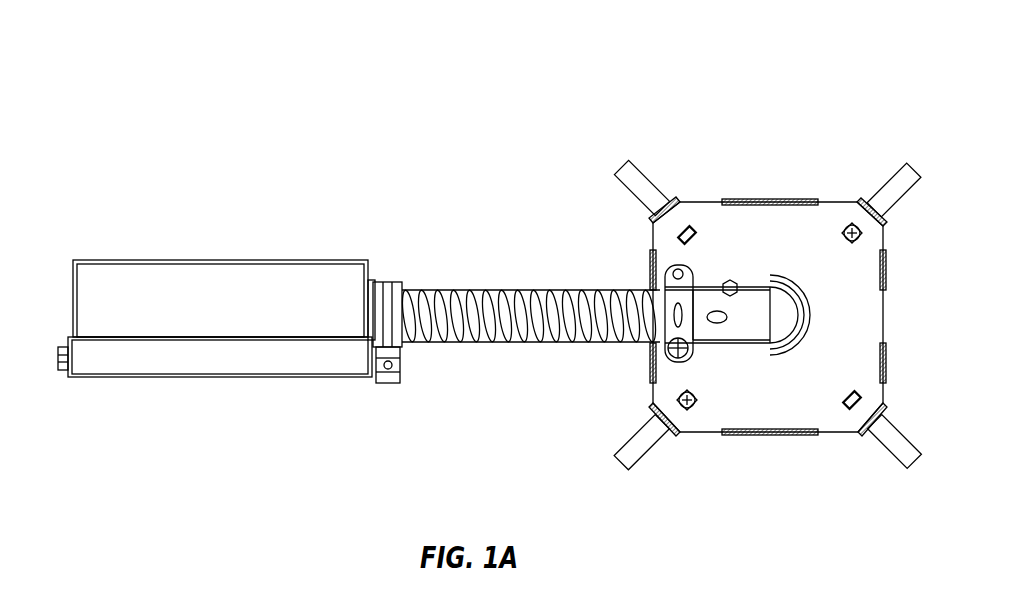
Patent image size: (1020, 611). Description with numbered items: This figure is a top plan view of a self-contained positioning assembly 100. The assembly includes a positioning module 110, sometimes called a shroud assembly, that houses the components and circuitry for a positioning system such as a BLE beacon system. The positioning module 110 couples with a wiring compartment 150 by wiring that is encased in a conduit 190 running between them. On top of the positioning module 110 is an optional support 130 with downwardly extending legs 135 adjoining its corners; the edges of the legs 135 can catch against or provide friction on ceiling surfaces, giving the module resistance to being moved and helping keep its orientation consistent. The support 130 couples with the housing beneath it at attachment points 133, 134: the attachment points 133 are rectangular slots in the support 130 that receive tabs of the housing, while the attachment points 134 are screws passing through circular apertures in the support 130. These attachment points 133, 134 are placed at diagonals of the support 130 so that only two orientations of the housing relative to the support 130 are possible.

The self-contained positioning assembly 100 is at (132, 64).
The positioning module 110 is at (767, 151).
The support 130 is at (800, 225).
The attachment points 133 is at (688, 226).
The attachment points 134 is at (855, 225).
The legs 135 is at (645, 195).
The wiring compartment 150 is at (282, 285).
The conduit 190 is at (512, 290).